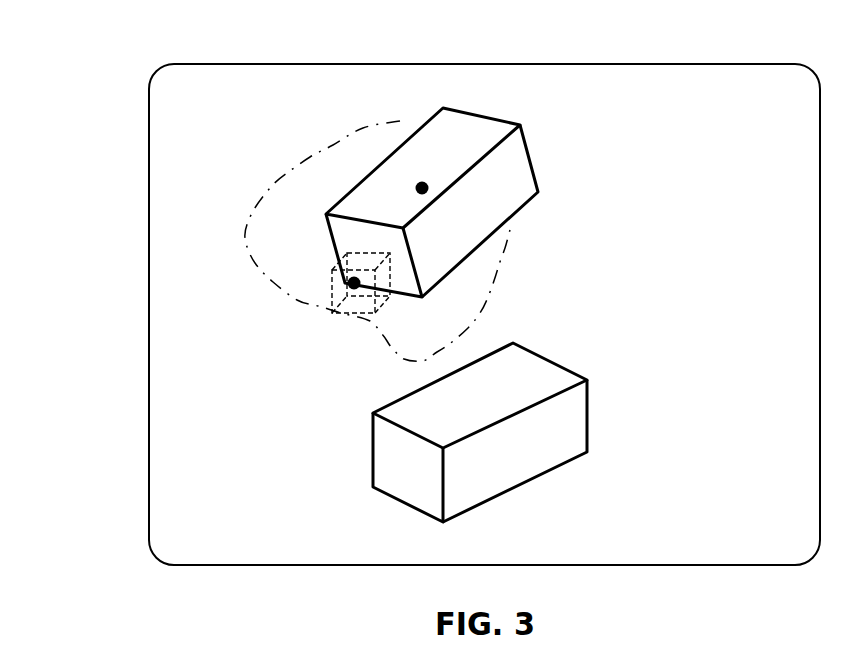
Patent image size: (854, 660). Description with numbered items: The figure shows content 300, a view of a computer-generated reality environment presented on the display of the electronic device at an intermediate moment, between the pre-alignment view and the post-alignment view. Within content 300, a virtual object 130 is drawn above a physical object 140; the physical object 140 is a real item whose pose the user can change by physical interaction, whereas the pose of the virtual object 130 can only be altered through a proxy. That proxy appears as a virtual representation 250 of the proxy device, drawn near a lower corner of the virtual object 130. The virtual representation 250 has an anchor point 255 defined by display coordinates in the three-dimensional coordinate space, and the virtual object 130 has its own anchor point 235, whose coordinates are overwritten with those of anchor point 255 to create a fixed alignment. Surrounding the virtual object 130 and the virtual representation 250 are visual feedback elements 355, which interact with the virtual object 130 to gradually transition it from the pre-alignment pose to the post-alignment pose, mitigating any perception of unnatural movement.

The content 300 is at (107, 53).
The virtual object 130 is at (546, 185).
The physical object 140 is at (480, 432).
The anchor point 235 is at (424, 182).
The virtual representation 250 is at (355, 318).
The anchor point 255 is at (350, 286).
The visual feedback elements 355 is at (272, 186).